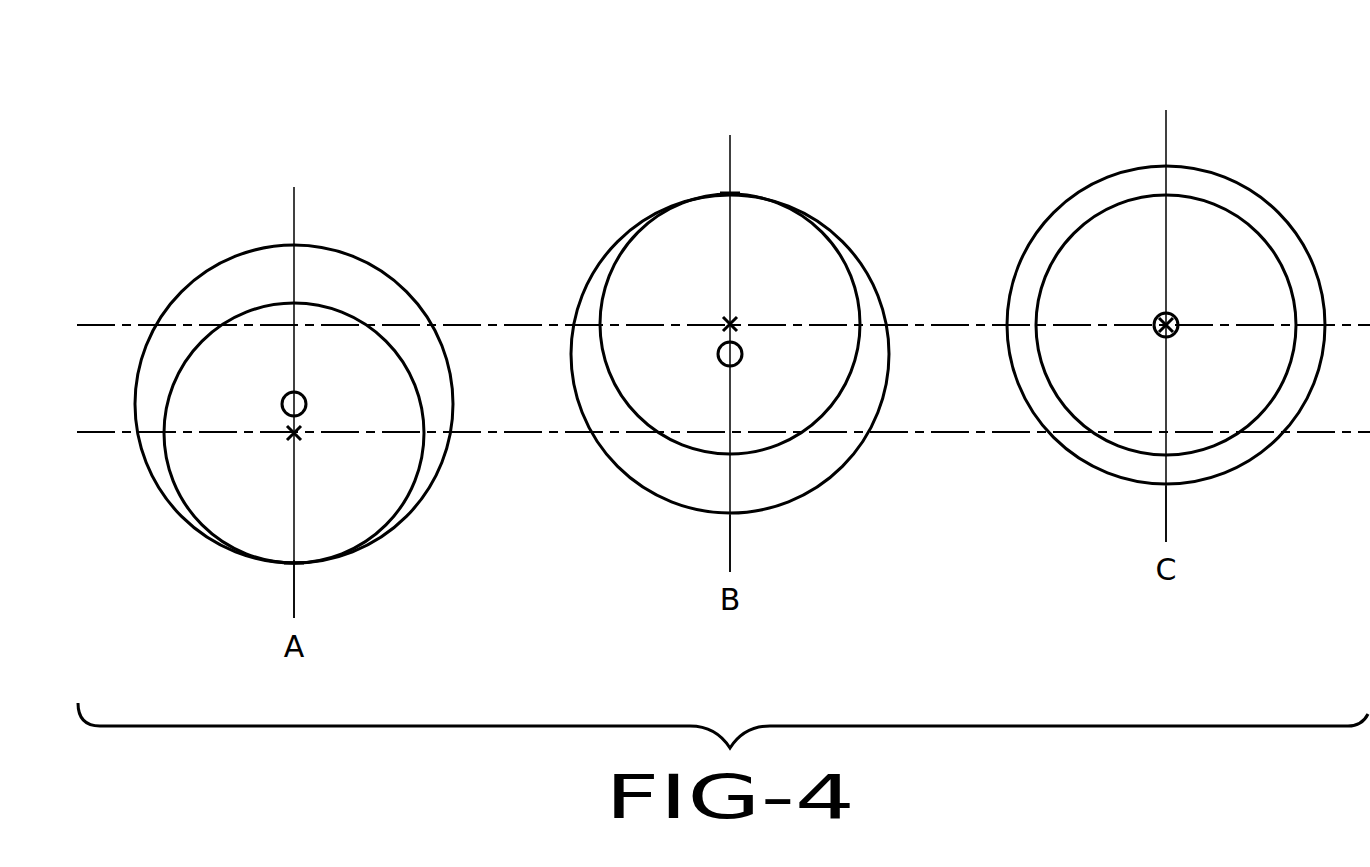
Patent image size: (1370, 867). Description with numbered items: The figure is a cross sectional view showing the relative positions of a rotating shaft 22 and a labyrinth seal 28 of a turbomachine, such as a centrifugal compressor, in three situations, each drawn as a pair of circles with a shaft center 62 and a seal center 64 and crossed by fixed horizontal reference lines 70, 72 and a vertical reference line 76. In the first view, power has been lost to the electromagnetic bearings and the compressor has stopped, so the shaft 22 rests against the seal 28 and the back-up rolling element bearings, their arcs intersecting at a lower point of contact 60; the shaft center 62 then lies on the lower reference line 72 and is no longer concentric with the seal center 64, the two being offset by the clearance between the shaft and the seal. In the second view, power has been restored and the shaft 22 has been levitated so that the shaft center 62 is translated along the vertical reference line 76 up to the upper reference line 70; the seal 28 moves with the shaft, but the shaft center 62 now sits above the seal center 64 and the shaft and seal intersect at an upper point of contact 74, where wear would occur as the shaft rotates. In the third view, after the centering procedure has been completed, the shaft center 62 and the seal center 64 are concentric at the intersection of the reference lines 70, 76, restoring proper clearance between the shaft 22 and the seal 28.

In FIG. 4A, the shaft 22 is at (346, 310).
In FIG. 4B, the shaft 22 is at (784, 452).
In FIG. 4C, the shaft 22 is at (1219, 203).
In FIG. 4A, the labyrinth seal 28 is at (246, 246).
In FIG. 4B, the labyrinth seal 28 is at (682, 512).
In FIG. 4C, the labyrinth seal 28 is at (1118, 167).
In FIG. 4A, the lower point of contact 60 is at (290, 566).
In FIG. 4A, the shaft center 62 is at (291, 444).
In FIG. 4B, the shaft center 62 is at (733, 314).
In FIG. 4C, the shaft center 62 is at (1169, 314).
In FIG. 4A, the seal center 64 is at (284, 396).
In FIG. 4B, the seal center 64 is at (722, 364).
In FIG. 4C, the seal center 64 is at (1159, 335).
In FIG. 4, the upper reference line 70 is at (98, 325).
In FIG. 4, the lower reference line 72 is at (98, 433).
In FIG. 4B, the upper point of contact 74 is at (738, 191).
In FIG. 4A, the vertical reference line 76 is at (298, 597).
In FIG. 4B, the vertical reference line 76 is at (733, 543).
In FIG. 4C, the vertical reference line 76 is at (1168, 515).